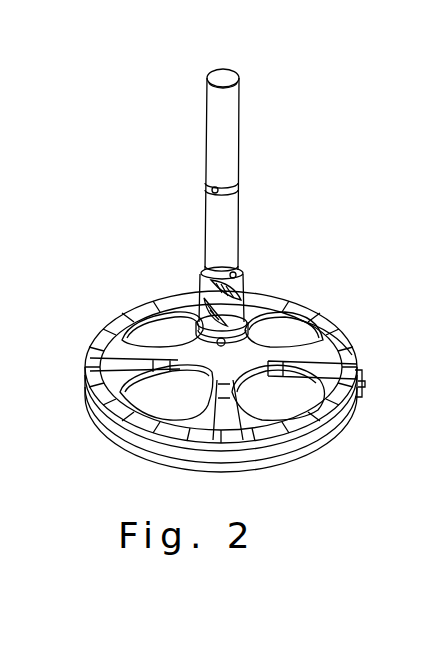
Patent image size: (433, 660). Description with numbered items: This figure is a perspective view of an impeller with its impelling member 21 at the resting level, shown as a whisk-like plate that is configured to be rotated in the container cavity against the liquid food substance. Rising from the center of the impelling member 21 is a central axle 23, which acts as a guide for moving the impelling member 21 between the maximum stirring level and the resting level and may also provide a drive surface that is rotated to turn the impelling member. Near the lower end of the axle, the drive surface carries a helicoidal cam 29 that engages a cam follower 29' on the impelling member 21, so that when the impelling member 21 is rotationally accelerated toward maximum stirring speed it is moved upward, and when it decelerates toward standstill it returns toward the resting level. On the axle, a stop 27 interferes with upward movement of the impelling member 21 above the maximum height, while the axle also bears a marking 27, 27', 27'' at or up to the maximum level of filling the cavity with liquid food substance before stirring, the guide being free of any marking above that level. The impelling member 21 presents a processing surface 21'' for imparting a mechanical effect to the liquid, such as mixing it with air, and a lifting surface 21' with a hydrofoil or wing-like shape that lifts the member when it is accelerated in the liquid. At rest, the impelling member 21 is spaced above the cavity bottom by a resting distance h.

The central axle 23 is at (223, 137).
The stop 27 is at (265, 241).
The marking 27' is at (159, 159).
The marking 27'' is at (143, 278).
The cam 29 is at (253, 303).
The cam follower 29' is at (168, 287).
The impelling member 21 is at (197, 372).
The lifting surface 21' is at (294, 379).
The processing surface 21'' is at (352, 322).
The resting distance h is at (365, 384).